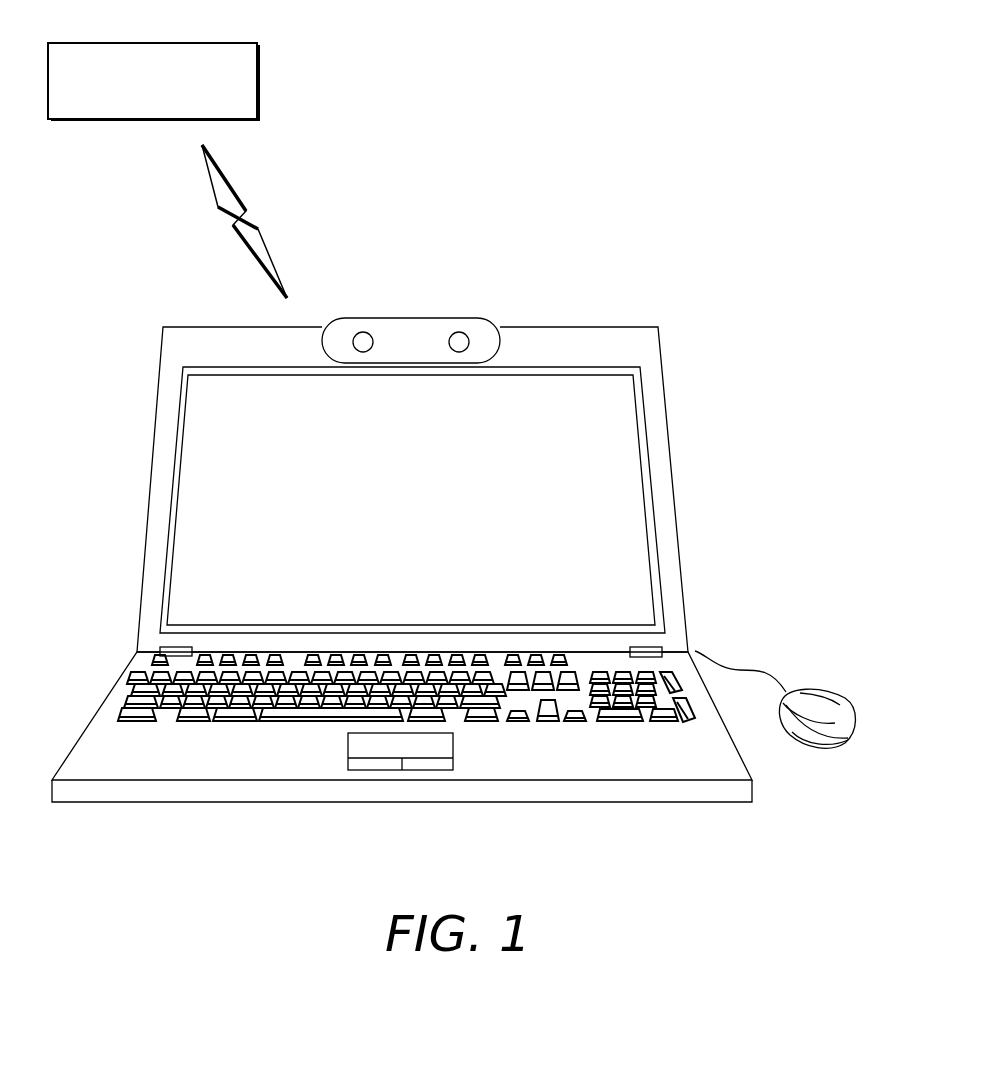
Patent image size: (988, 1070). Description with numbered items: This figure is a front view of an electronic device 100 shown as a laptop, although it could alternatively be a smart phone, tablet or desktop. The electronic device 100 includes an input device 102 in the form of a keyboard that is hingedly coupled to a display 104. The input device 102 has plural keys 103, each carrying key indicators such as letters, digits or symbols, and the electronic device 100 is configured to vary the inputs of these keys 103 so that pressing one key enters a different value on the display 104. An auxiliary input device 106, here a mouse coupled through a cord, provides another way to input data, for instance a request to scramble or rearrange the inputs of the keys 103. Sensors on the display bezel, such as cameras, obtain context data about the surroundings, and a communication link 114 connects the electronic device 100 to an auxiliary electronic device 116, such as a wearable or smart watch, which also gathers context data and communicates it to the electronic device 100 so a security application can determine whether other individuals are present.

The electronic device 100 is at (705, 295).
The input device 102 is at (732, 832).
The keys 103 is at (255, 705).
The display 104 is at (703, 390).
The auxiliary input device 106 is at (837, 698).
The communication link 114 is at (243, 207).
The auxiliary electronic device 116 is at (210, 43).